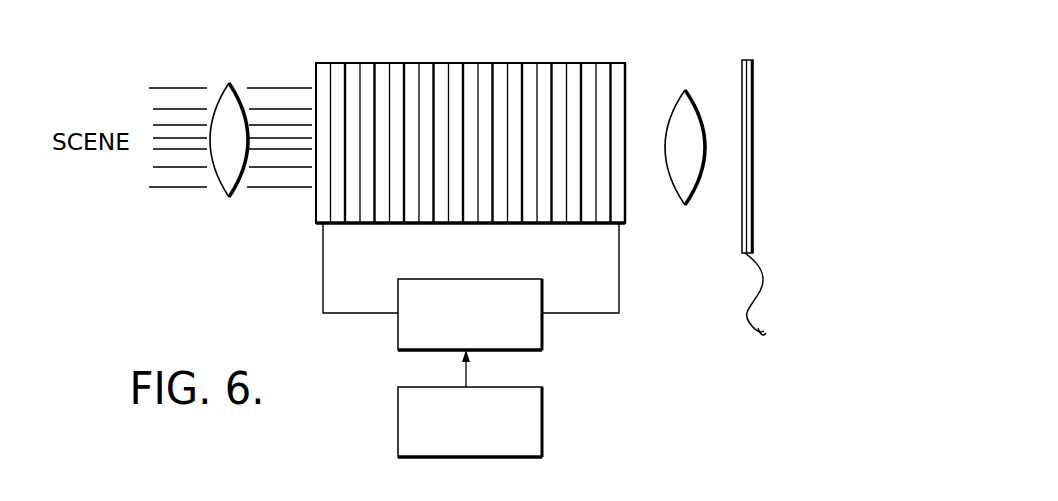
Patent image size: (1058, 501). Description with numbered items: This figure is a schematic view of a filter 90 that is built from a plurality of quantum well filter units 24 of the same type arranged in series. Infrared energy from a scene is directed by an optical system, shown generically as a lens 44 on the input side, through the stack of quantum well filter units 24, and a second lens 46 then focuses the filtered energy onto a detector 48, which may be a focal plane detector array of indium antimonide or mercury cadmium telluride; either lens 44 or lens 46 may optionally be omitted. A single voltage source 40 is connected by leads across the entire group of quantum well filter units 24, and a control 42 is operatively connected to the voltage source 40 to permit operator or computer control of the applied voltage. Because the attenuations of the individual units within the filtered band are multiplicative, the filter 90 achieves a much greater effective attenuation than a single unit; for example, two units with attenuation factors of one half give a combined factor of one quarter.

The quantum well filter unit 24 is at (355, 69).
The voltage source 40 is at (542, 348).
The control 42 is at (542, 455).
The lens 44 is at (227, 194).
The lens 46 is at (683, 89).
The detector 48 is at (742, 60).
The filter 90 is at (265, 250).